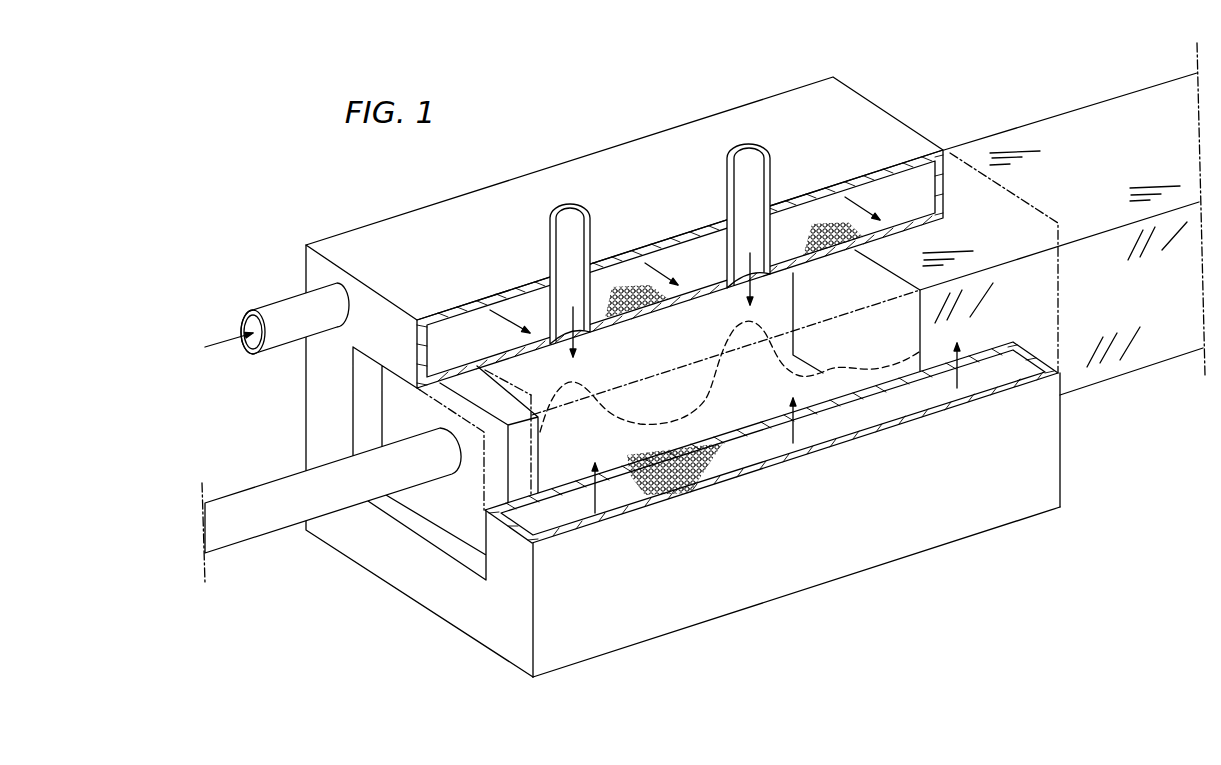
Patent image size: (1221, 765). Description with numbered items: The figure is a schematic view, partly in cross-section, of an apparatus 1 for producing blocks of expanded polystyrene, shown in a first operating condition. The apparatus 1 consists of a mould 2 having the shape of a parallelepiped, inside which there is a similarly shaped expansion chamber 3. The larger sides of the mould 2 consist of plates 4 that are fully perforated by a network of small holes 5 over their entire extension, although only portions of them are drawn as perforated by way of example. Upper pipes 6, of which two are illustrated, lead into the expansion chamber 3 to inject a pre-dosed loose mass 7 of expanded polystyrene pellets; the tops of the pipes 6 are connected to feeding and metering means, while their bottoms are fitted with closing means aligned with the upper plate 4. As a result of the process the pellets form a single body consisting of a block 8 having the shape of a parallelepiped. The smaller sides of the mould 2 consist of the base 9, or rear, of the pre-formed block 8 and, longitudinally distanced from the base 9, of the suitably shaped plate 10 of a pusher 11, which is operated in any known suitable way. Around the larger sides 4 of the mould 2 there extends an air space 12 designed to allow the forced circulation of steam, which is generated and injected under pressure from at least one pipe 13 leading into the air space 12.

The apparatus 1 is at (1010, 523).
The mould 2 is at (783, 575).
The expansion chamber 3 is at (663, 357).
The plates 4 is at (697, 293).
The small holes 5 is at (628, 290).
The upper pipes 6 is at (573, 227).
The loose mass 7 is at (741, 402).
The block 8 is at (1148, 347).
The base 9 is at (859, 351).
The plate 10 is at (467, 510).
The pusher 11 is at (272, 530).
The air space 12 is at (483, 343).
The pipe 13 is at (282, 312).